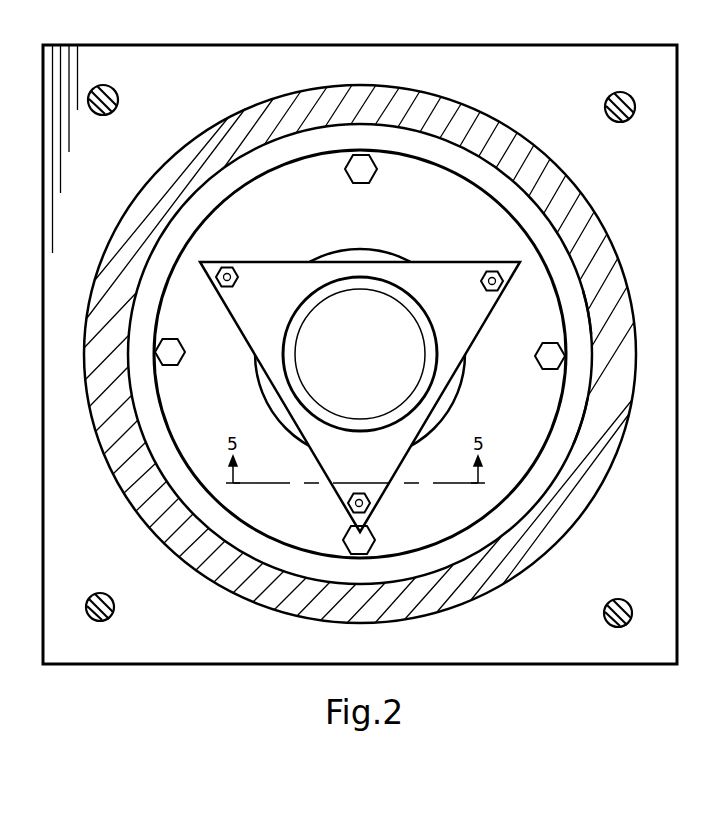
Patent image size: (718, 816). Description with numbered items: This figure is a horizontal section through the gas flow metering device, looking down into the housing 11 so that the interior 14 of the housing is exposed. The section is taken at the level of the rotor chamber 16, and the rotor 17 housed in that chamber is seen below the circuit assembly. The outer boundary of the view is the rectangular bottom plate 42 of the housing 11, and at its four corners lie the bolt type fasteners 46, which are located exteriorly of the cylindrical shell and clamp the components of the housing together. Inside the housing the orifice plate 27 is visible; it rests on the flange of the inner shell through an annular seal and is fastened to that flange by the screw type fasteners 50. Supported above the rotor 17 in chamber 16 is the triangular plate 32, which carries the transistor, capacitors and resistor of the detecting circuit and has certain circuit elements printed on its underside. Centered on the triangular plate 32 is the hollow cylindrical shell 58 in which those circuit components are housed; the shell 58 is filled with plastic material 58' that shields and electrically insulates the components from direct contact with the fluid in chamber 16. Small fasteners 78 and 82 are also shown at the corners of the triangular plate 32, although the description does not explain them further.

The housing 11 is at (593, 203).
The interior of the housing 14 is at (588, 312).
The rotor chamber 16 is at (583, 422).
The rotor 17 is at (463, 387).
The orifice plate 27 is at (391, 153).
The triangular plate 32 is at (308, 262).
The bottom plate 42 is at (678, 618).
The bolt type fasteners 46 is at (628, 99).
The screw type fasteners 50 is at (182, 347).
The hollow cylindrical shell 58 is at (371, 354).
The plastic material 58' is at (341, 354).
The nut 78 is at (482, 280).
The nuts 82 is at (236, 283).